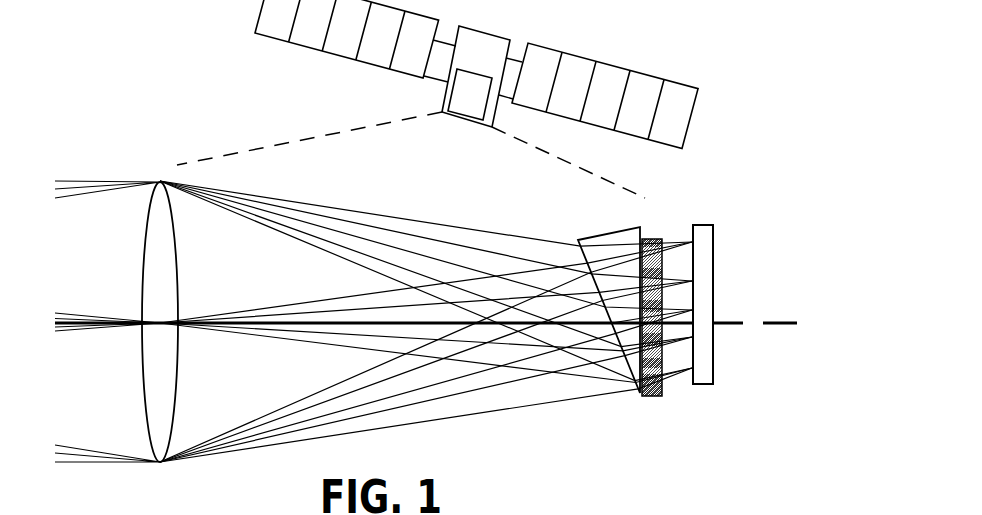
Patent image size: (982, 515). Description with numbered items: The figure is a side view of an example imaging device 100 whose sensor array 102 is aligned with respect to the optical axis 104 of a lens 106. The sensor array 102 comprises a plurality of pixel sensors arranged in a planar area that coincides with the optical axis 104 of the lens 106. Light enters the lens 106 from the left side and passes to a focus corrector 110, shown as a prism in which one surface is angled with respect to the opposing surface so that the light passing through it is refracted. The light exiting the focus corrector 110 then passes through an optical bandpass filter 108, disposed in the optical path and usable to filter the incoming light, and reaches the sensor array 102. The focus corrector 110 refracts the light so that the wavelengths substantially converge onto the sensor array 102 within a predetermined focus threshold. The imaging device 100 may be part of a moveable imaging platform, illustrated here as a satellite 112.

The imaging device 100 is at (164, 95).
The sensor array 102 is at (705, 260).
The optical axis 104 is at (768, 313).
The lens 106 is at (140, 285).
The optical bandpass filter 108 is at (662, 398).
The focus corrector 110 is at (638, 230).
The satellite 112 is at (690, 122).